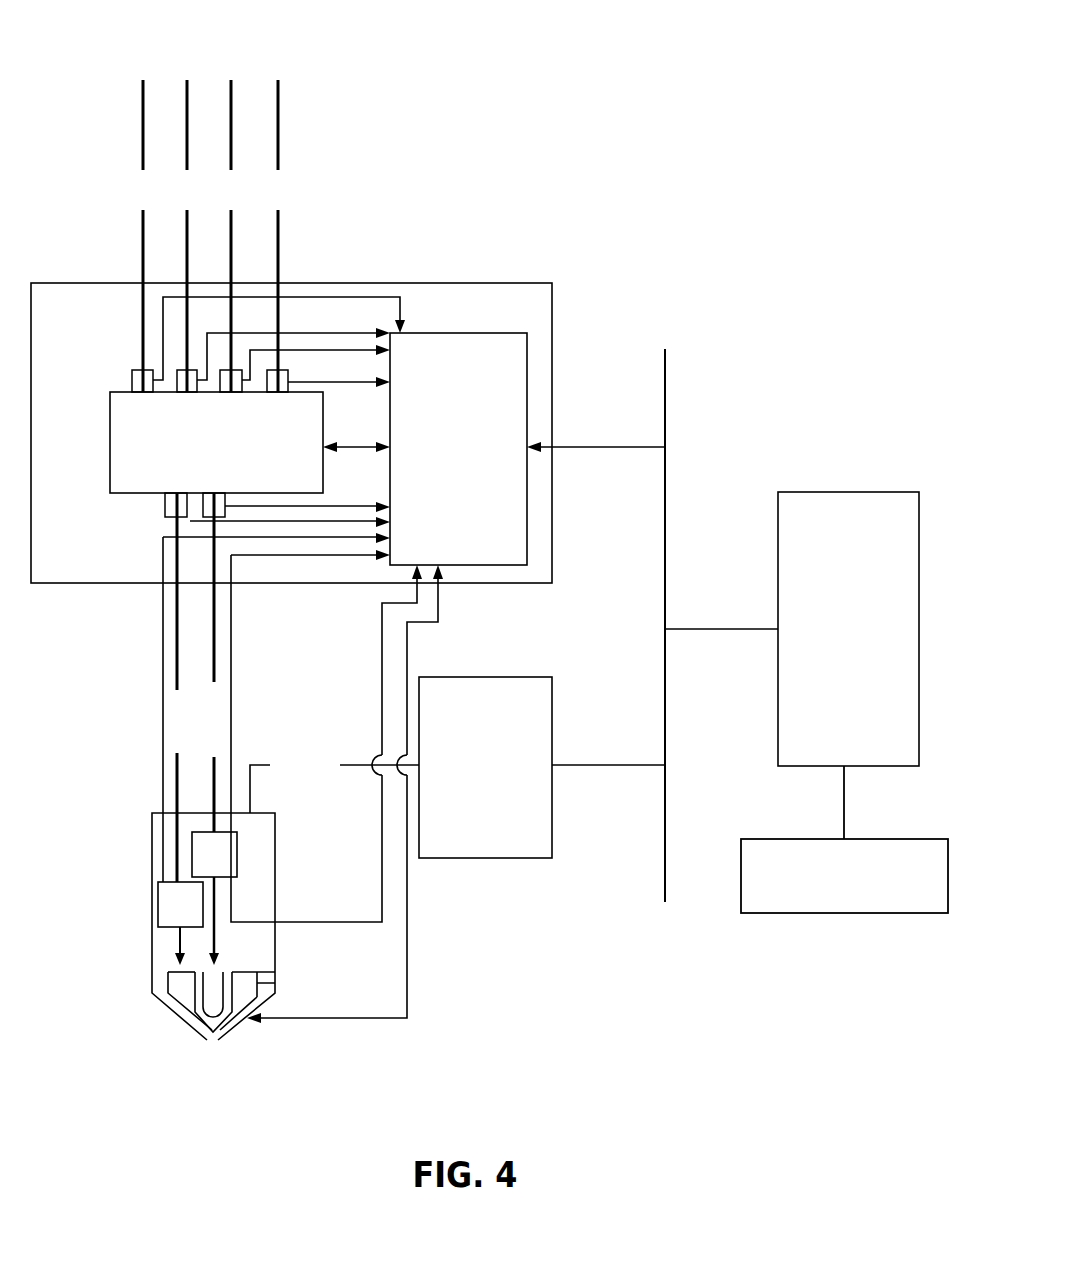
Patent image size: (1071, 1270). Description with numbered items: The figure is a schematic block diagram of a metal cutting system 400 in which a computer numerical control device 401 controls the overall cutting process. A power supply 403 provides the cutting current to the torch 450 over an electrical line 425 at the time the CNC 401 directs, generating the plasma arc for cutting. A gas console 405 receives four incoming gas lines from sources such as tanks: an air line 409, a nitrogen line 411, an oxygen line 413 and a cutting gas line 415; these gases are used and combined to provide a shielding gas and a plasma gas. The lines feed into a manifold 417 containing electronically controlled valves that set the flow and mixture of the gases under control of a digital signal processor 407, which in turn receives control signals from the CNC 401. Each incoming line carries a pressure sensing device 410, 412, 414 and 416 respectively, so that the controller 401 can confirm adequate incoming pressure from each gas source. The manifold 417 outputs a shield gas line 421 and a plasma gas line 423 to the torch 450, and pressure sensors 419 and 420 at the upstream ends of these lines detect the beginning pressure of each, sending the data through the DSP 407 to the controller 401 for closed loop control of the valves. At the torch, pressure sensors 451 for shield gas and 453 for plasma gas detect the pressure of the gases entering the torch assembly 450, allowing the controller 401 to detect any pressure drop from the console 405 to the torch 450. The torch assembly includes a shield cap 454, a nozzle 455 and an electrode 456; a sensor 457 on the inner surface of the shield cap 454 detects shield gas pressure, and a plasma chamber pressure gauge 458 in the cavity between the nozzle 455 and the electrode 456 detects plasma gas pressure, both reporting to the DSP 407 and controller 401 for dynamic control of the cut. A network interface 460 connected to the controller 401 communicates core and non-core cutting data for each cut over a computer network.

The metal cutting system 400 is at (573, 82).
The computer numerical control (CNC) device 401 is at (846, 492).
The power supply 403 is at (552, 800).
The gas console 405 is at (553, 323).
The digital signal processor (DSP) 407 is at (465, 333).
The air line 409 is at (143, 147).
The pressure sensing device 410 is at (132, 378).
The nitrogen line 411 is at (187, 110).
The pressure sensing device 412 is at (177, 363).
The oxygen line 413 is at (231, 118).
The pressure sensing device 414 is at (250, 377).
The cutting gas line 415 is at (278, 150).
The pressure sensing device 416 is at (288, 372).
The manifold 417 is at (110, 440).
The pressure sensor 419 is at (165, 505).
The pressure sensor 420 is at (197, 512).
The shield gas line 421 is at (177, 795).
The plasma gas line 423 is at (215, 645).
The electrical line 425 is at (250, 792).
The torch 450 is at (153, 935).
The pressure sensor 451 is at (158, 892).
The pressure sensor 453 is at (237, 850).
The shield cap 454 is at (182, 1025).
The nozzle 455 is at (275, 980).
The electrode 456 is at (203, 980).
The sensor 457 is at (250, 1022).
The plasma chamber pressure gauge 458 is at (232, 993).
The network interface 460 is at (796, 839).